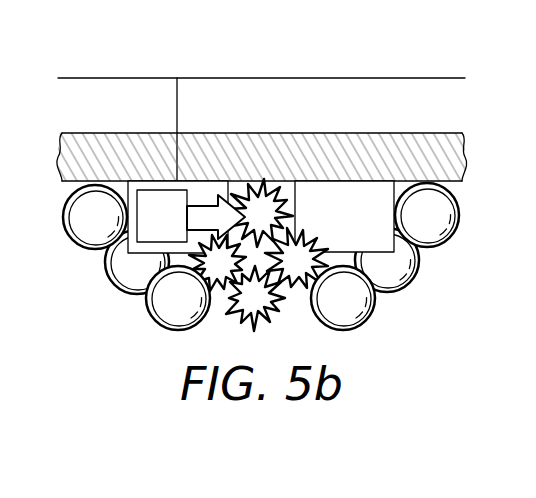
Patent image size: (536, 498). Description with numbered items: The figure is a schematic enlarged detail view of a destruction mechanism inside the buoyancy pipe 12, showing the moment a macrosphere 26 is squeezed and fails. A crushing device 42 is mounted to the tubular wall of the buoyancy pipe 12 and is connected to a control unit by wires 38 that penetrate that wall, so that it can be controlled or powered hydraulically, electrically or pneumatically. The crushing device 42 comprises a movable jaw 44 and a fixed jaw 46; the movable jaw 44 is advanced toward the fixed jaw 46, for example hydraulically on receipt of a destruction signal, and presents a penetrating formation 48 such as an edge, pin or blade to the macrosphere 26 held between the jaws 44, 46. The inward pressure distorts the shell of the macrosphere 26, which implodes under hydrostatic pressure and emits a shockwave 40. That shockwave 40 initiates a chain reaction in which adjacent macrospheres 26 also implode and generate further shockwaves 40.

The buoyancy pipe 12 is at (462, 153).
The macrosphere 26 is at (67, 214).
The wires 38 is at (405, 78).
The shockwave 40 is at (258, 195).
The crushing device 42 is at (393, 258).
The movable jaw 44 is at (152, 200).
The fixed jaw 46 is at (342, 193).
The penetrating formation 48 is at (204, 206).